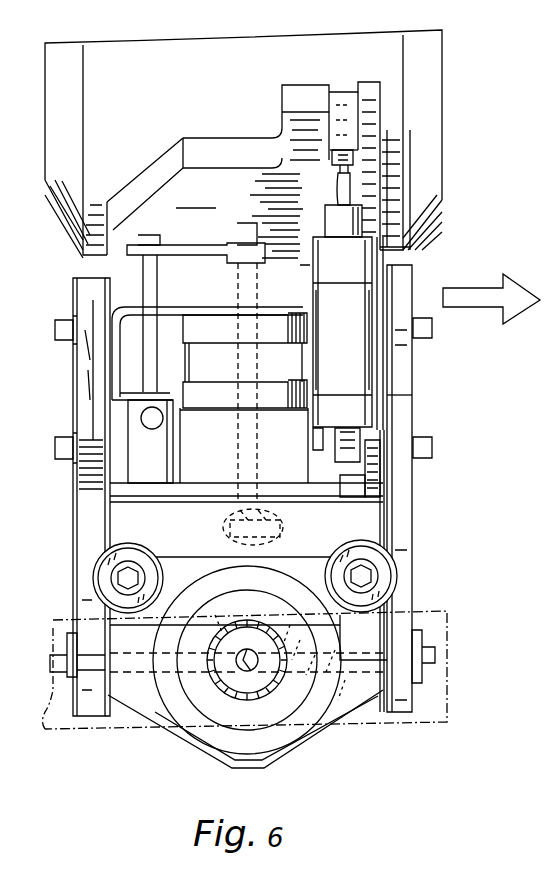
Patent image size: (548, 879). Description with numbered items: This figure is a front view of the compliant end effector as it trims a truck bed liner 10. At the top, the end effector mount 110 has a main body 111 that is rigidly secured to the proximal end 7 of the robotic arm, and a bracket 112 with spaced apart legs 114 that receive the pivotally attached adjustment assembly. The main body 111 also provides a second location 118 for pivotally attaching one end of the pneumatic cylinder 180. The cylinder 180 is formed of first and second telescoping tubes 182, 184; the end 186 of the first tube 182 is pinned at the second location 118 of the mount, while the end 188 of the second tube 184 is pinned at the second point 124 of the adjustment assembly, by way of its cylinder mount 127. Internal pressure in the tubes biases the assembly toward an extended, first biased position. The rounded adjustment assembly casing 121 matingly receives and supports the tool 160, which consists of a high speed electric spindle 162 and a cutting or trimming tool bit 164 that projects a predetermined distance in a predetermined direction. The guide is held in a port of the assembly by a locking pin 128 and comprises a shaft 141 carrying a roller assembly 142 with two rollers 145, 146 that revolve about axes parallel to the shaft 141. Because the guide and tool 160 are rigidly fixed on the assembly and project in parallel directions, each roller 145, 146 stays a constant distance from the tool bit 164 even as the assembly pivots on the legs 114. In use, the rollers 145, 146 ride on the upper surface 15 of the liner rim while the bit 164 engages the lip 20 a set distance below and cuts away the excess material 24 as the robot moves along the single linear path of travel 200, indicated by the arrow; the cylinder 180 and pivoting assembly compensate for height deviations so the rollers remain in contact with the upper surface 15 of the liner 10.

The proximal end 7 is at (426, 52).
The truck bed liner 10 is at (452, 663).
The upper surface 15 is at (438, 572).
The lip 20 is at (67, 612).
The excess material 24 is at (55, 746).
The mount 110 is at (393, 398).
The main body 111 is at (196, 197).
The bracket 112 is at (86, 380).
The legs 114 is at (92, 528).
The second location 118 is at (372, 142).
The adjustment assembly casing 121 is at (150, 692).
The second point 124 is at (380, 461).
The mount 127 is at (363, 488).
The locking pin 128 is at (250, 505).
The shaft 141 is at (284, 528).
The roller assembly 142 is at (200, 530).
The roller 145 is at (385, 562).
The roller 146 is at (162, 579).
The tool 160 is at (243, 765).
The spindle 162 is at (287, 738).
The tool bit 164 is at (262, 672).
The pneumatic cylinder 180 is at (360, 349).
The first tube 182 is at (367, 203).
The second tube 184 is at (372, 258).
The end 186 is at (350, 167).
The end 188 is at (365, 440).
The linear path of travel 200 is at (455, 315).